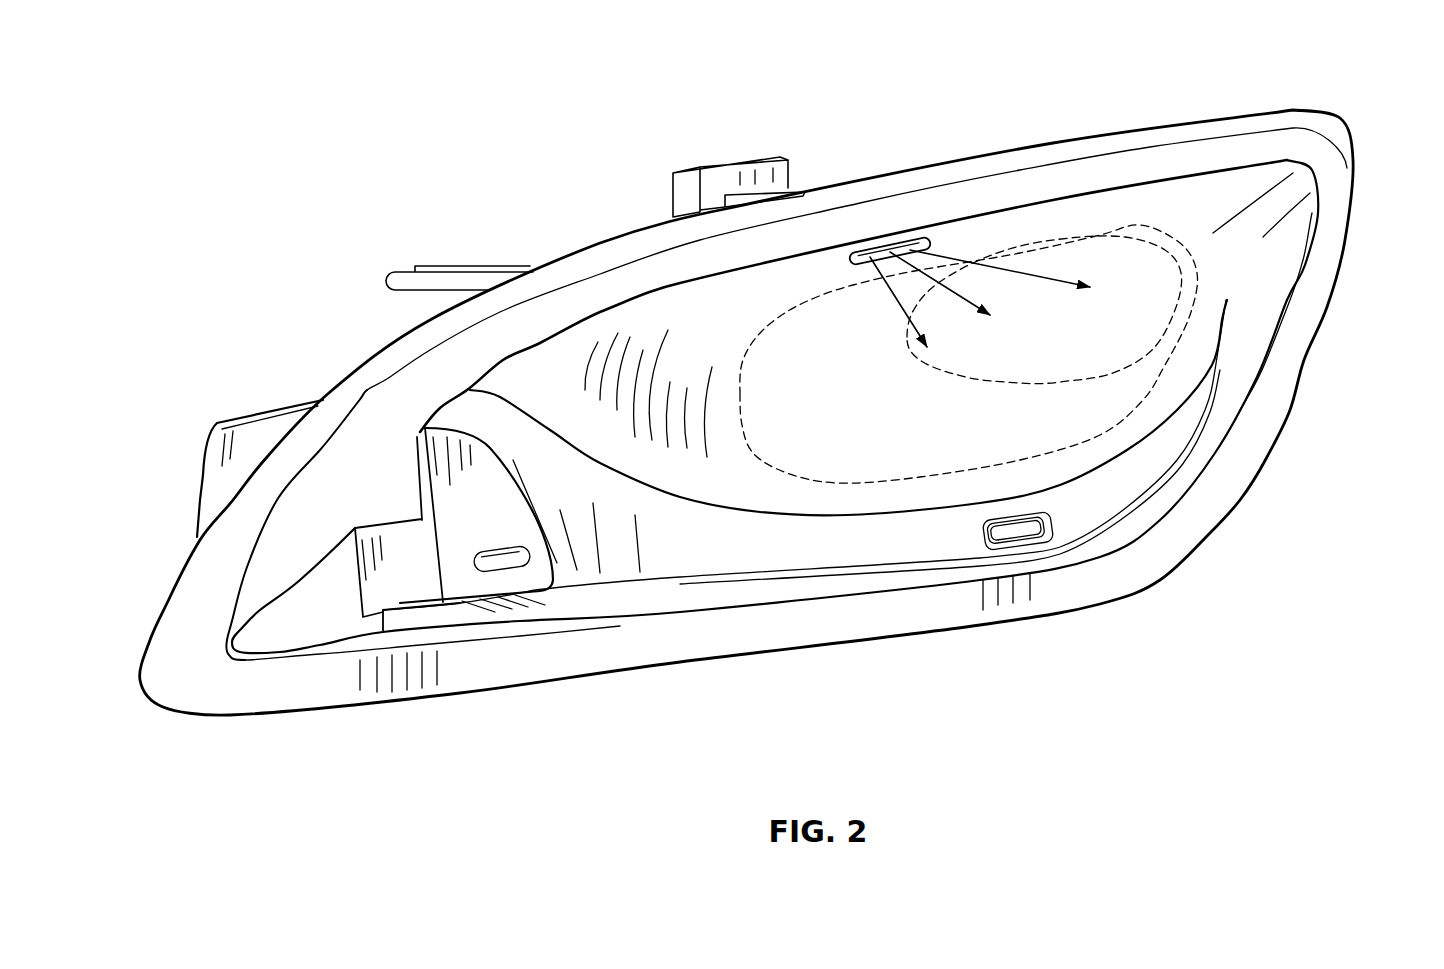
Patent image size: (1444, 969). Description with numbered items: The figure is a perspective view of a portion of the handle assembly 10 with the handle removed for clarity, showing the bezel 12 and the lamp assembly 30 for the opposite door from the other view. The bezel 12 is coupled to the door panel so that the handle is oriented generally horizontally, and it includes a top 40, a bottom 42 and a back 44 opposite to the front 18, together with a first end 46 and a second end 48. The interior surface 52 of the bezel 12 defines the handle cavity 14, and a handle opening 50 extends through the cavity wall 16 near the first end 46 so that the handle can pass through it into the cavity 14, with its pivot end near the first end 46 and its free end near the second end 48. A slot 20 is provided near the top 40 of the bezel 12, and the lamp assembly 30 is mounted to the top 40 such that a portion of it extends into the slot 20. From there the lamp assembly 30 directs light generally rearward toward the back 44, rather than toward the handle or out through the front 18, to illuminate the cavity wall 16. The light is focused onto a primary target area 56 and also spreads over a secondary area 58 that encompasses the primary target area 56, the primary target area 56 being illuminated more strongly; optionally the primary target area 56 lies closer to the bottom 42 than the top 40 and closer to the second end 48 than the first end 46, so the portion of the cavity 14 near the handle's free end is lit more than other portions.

The handle assembly 10 is at (430, 88).
The bezel 12 is at (1070, 590).
The handle cavity 14 is at (1262, 257).
The cavity wall 16 is at (840, 548).
The front 18 is at (1142, 537).
The slot 20 is at (880, 245).
The lamp assembly 30 is at (702, 148).
The top 40 is at (1133, 133).
The bottom 42 is at (920, 633).
The back 44 is at (933, 330).
The first end 46 is at (178, 598).
The second end 48 is at (1303, 323).
The handle opening 50 is at (402, 502).
The interior surface 52 is at (1100, 450).
The primary target area 56 is at (1140, 280).
The secondary area 58 is at (1188, 280).